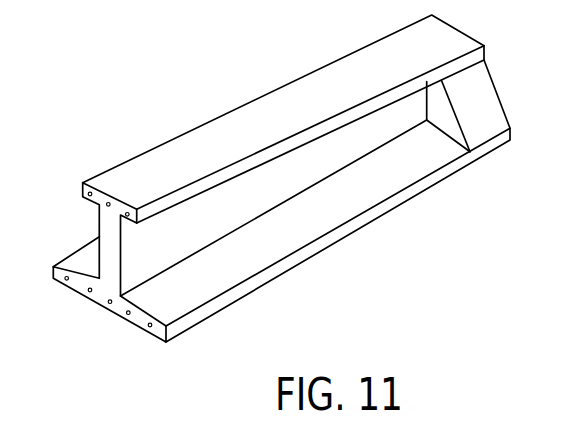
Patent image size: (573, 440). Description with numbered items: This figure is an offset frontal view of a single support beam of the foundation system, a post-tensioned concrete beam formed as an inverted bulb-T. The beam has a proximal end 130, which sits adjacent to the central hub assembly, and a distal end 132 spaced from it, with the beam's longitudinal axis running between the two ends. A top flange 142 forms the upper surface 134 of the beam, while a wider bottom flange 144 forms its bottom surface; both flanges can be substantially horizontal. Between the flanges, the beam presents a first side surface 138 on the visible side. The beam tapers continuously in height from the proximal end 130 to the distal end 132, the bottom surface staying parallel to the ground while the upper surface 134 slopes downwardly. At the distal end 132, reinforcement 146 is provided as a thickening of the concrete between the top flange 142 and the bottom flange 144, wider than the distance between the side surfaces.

The proximal end 130 is at (287, 182).
The distal end 132 is at (496, 134).
The upper surface 134 is at (283, 112).
The first side surface 138 is at (274, 177).
The top flange 142 is at (427, 42).
The bottom flange 144 is at (212, 303).
The reinforcement 146 is at (480, 113).